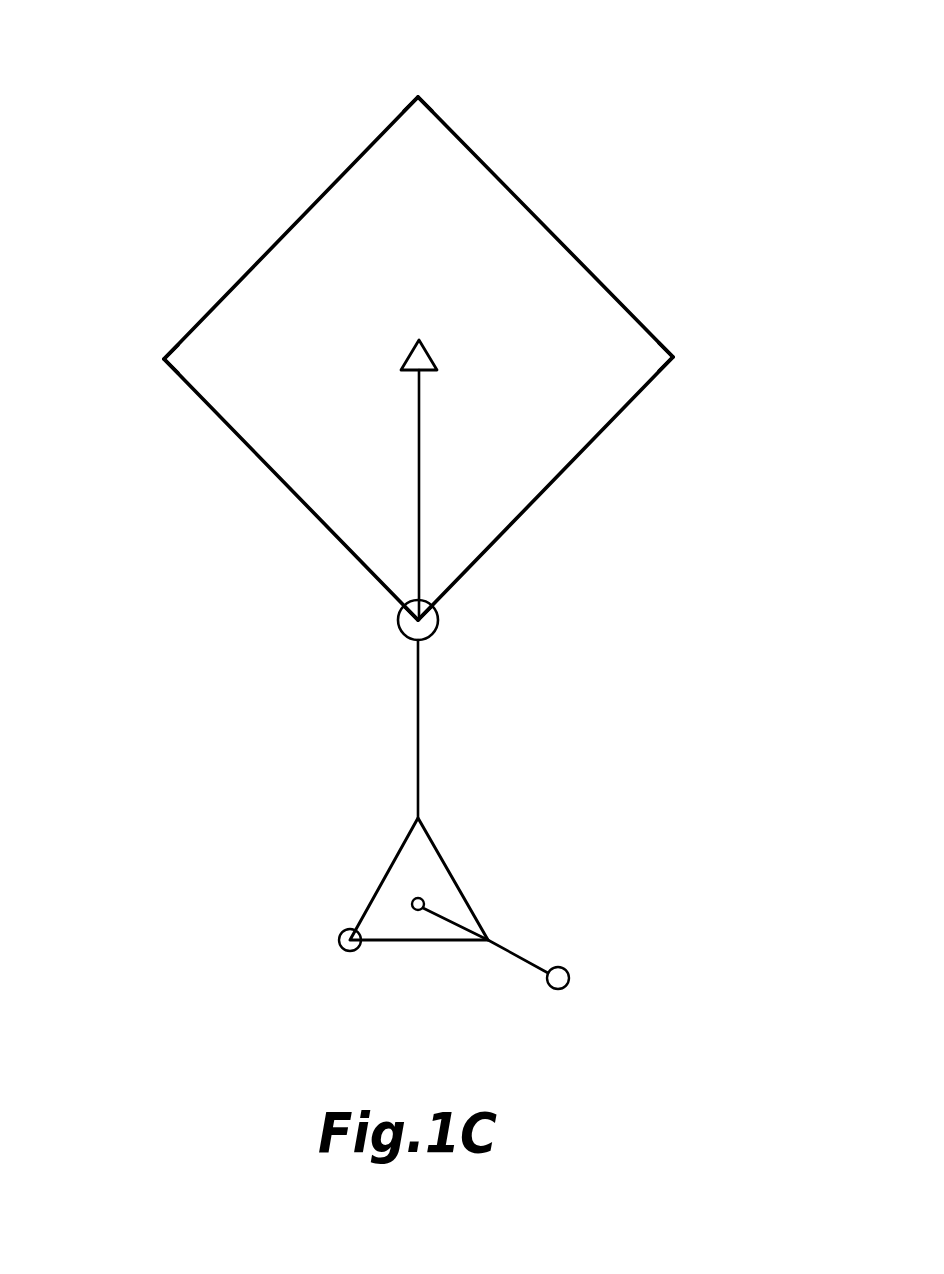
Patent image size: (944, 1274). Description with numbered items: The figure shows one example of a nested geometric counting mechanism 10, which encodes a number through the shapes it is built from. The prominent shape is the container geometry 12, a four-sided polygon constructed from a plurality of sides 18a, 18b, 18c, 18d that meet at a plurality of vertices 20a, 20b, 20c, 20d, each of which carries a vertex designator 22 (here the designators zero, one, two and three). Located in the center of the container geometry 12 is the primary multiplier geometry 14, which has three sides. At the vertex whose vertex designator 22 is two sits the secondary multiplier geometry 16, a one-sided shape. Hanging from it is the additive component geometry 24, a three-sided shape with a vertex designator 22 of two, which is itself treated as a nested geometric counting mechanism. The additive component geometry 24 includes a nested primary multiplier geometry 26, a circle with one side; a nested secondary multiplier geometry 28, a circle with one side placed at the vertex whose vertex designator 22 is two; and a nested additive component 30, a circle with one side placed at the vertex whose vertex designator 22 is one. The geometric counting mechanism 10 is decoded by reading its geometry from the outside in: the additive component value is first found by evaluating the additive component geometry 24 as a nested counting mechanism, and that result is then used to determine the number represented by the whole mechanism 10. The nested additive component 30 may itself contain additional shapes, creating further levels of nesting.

The geometric counting mechanism 10 is at (150, 75).
The container geometry 12 is at (441, 358).
The primary multiplier geometry 14 is at (425, 340).
The secondary multiplier geometry 16 is at (440, 620).
The side 18a is at (280, 240).
The side 18b is at (283, 487).
The side 18c is at (550, 488).
The side 18d is at (545, 200).
The vertex 20a is at (400, 122).
The vertex 20b is at (675, 343).
The vertex 20c is at (398, 590).
The vertex 20d is at (175, 340).
The vertex designator 22 is at (450, 152).
The additive component geometry 24 is at (435, 822).
The nested primary multiplier geometry 26 is at (425, 902).
The nested secondary multiplier geometry 28 is at (340, 935).
The nested additive component 30 is at (570, 975).